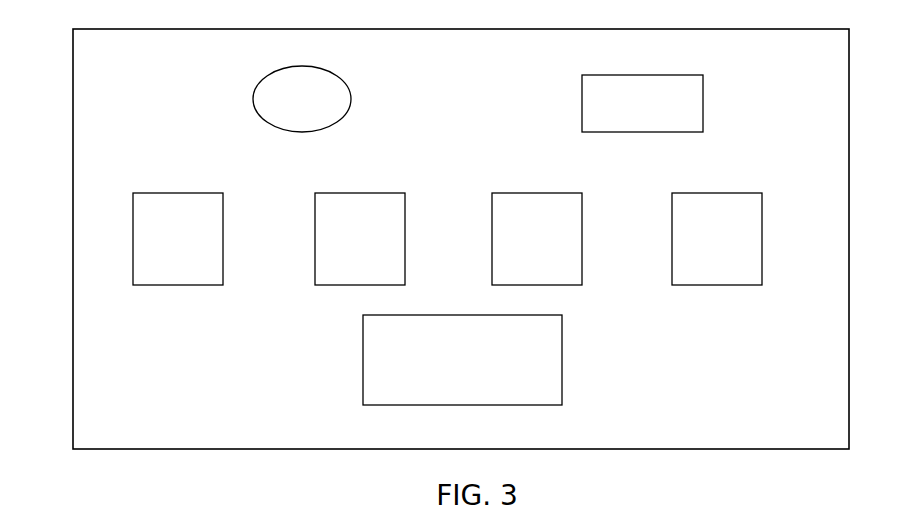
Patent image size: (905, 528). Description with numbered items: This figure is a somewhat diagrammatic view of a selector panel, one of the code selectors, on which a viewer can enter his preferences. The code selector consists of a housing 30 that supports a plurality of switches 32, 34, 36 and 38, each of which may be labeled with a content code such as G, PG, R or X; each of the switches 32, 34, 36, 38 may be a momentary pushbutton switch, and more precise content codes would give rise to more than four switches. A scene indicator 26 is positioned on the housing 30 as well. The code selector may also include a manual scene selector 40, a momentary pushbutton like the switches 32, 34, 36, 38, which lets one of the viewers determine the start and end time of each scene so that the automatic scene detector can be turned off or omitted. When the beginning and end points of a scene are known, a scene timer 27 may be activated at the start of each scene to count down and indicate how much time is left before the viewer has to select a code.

The scene indicator 26 is at (362, 97).
The scene timer 27 is at (642, 103).
The housing 30 is at (86, 179).
The switch 32 is at (178, 239).
The switch 34 is at (360, 239).
The switch 36 is at (537, 239).
The switch 38 is at (717, 239).
The manual scene selector 40 is at (462, 360).